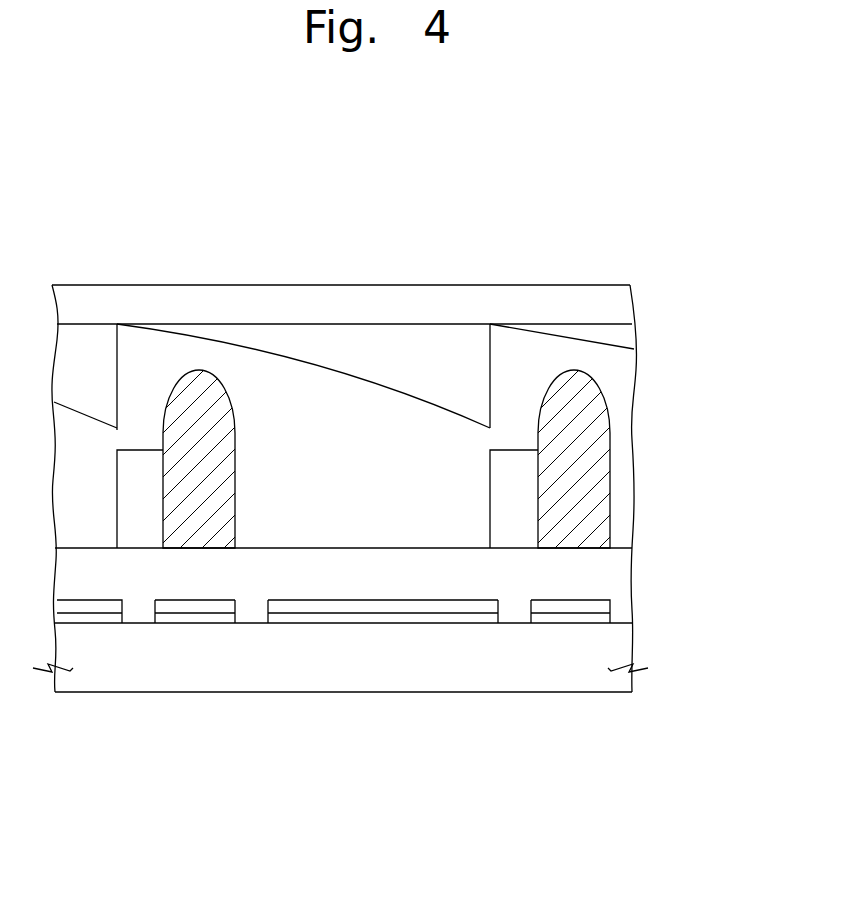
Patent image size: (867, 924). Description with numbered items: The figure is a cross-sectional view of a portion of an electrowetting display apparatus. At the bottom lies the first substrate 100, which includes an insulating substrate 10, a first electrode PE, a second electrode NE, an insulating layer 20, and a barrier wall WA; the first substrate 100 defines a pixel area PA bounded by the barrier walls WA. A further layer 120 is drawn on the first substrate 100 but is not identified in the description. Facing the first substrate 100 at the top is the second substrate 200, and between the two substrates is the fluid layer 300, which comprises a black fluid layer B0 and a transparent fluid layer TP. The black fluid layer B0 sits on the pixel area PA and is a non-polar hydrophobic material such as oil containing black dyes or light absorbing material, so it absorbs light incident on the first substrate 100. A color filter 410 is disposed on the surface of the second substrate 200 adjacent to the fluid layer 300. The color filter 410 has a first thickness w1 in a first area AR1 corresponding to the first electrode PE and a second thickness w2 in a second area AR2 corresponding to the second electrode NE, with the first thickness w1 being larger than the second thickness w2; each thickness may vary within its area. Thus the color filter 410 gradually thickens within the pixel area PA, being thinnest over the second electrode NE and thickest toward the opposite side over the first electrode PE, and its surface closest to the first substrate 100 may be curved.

The second substrate 200 is at (623, 303).
The color filter 410 is at (467, 385).
The first area AR1 is at (498, 270).
The second area AR2 is at (155, 270).
The first thickness w1 is at (426, 324).
The second thickness w2 is at (235, 324).
The barrier wall WA is at (138, 528).
The black fluid layer B0 is at (592, 535).
The transparent fluid layer TP is at (420, 510).
The pixel area PA is at (490, 559).
The insulating layer 20 is at (372, 590).
The upper electrode layer 120 is at (203, 605).
The second electrode NE is at (173, 620).
The first electrode PE is at (342, 620).
The insulating substrate 10 is at (432, 650).
The first substrate 100 is at (445, 756).
The fluid layer 300 is at (487, 756).